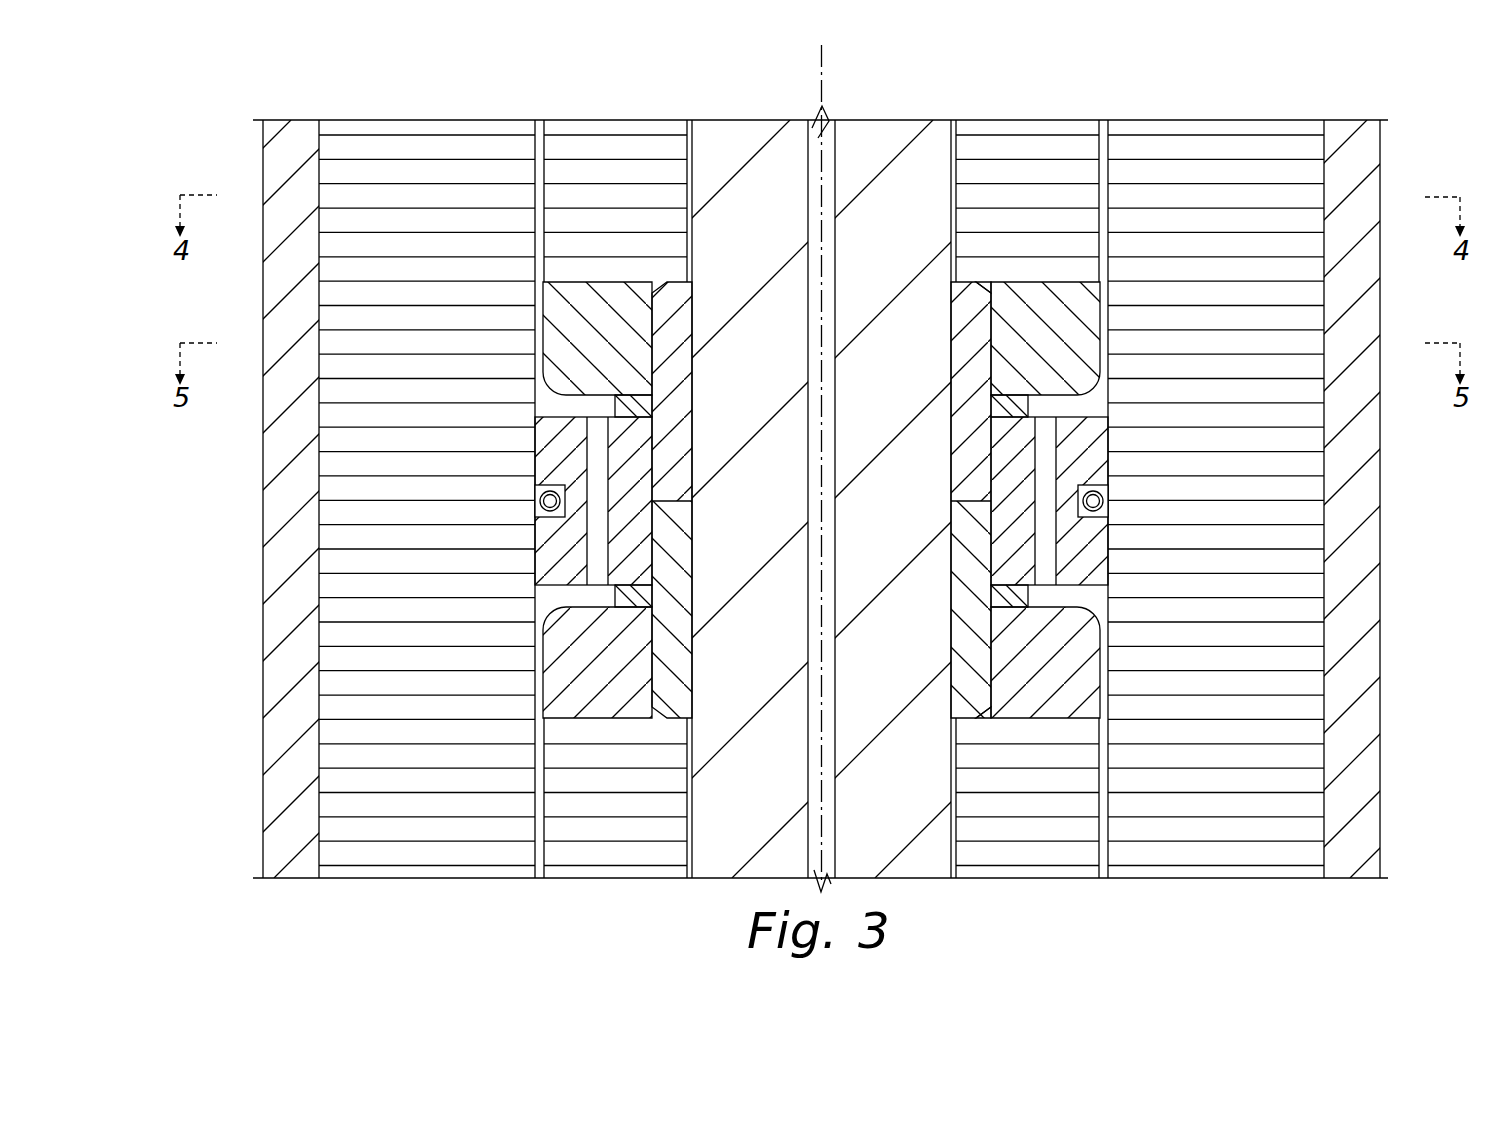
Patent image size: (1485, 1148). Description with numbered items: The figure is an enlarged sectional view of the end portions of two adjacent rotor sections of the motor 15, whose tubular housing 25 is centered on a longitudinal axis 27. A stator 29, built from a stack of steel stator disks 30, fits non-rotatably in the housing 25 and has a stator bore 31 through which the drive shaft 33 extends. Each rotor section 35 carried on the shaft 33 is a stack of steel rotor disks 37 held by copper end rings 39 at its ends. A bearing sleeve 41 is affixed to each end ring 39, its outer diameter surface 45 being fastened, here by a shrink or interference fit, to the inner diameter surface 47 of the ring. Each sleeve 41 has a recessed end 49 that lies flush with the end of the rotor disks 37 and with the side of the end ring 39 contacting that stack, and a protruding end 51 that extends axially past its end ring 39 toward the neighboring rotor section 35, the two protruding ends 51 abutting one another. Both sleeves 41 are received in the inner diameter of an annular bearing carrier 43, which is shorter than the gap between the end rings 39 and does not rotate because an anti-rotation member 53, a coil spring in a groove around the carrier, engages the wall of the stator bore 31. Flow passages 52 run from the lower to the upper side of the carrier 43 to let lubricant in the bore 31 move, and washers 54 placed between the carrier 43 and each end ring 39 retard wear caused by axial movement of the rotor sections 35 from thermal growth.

The motor 15 is at (178, 501).
The tubular housing 25 is at (1383, 490).
The longitudinal axis 27 is at (825, 70).
The stator 29 is at (1322, 585).
The stator disks 30 is at (1300, 660).
The stator bore 31 is at (1107, 801).
The drive shaft 33 is at (745, 135).
The rotor sections 35 is at (664, 192).
The rotor disks 37 is at (970, 780).
The end rings 39 is at (1035, 672).
The bearing sleeves 41 is at (970, 607).
The bearing carrier 43 is at (1010, 548).
The outer diameter surface 45 is at (1002, 367).
The inner diameter surface 47 is at (990, 302).
The recessed end 49 is at (667, 285).
The protruding ends 51 is at (672, 473).
The flow passages 52 is at (1042, 523).
The anti-rotation member 53 is at (1090, 500).
The washers 54 is at (638, 404).